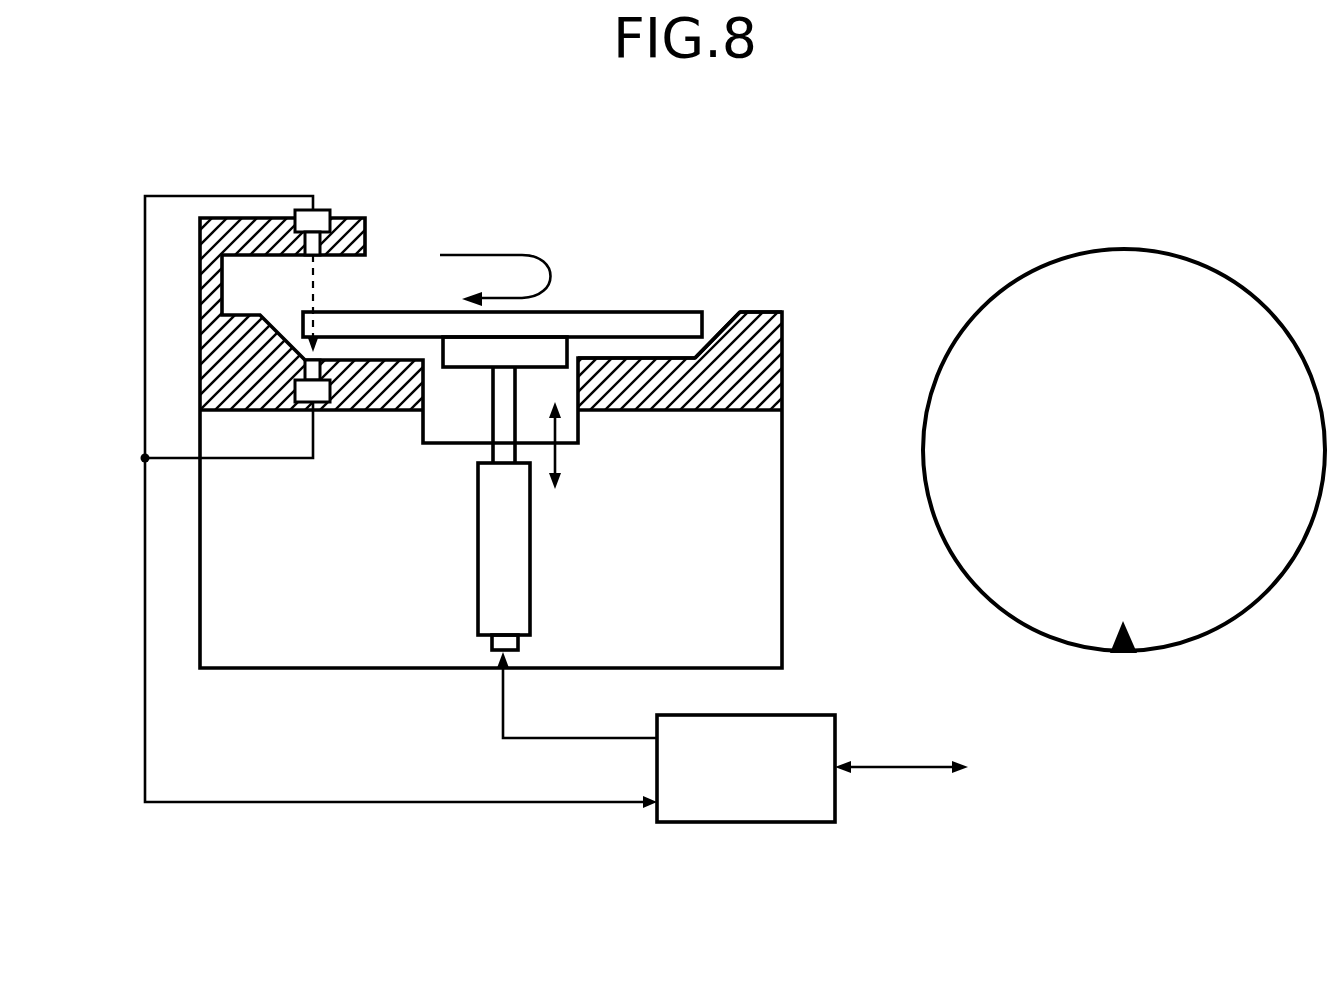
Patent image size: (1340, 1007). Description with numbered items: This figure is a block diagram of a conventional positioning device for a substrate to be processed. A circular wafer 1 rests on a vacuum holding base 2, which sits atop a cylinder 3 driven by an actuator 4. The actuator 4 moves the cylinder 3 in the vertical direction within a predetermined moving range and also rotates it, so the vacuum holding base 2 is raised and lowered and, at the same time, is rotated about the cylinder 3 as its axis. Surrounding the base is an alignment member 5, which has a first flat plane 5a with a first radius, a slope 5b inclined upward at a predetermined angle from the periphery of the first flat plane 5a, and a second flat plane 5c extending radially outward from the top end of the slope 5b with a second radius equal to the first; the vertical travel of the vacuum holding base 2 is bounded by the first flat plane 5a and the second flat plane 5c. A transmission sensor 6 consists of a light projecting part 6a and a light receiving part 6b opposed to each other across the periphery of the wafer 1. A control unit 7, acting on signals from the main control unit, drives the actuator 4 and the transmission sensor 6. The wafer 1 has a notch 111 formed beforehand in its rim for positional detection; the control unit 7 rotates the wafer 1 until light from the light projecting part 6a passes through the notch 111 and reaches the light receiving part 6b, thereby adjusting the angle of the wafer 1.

The wafer 1 is at (381, 312).
The vacuum holding base 2 is at (567, 350).
The cylinder 3 is at (493, 452).
The actuator 4 is at (478, 622).
The alignment member 5 is at (230, 393).
The first flat plane 5a is at (622, 358).
The slope 5b is at (718, 333).
The second flat plane 5c is at (768, 312).
The transmission sensor 6 is at (320, 296).
The light projecting part 6a is at (331, 212).
The light receiving part 6b is at (323, 402).
The control unit 7 is at (745, 822).
The notch 111 is at (1130, 622).